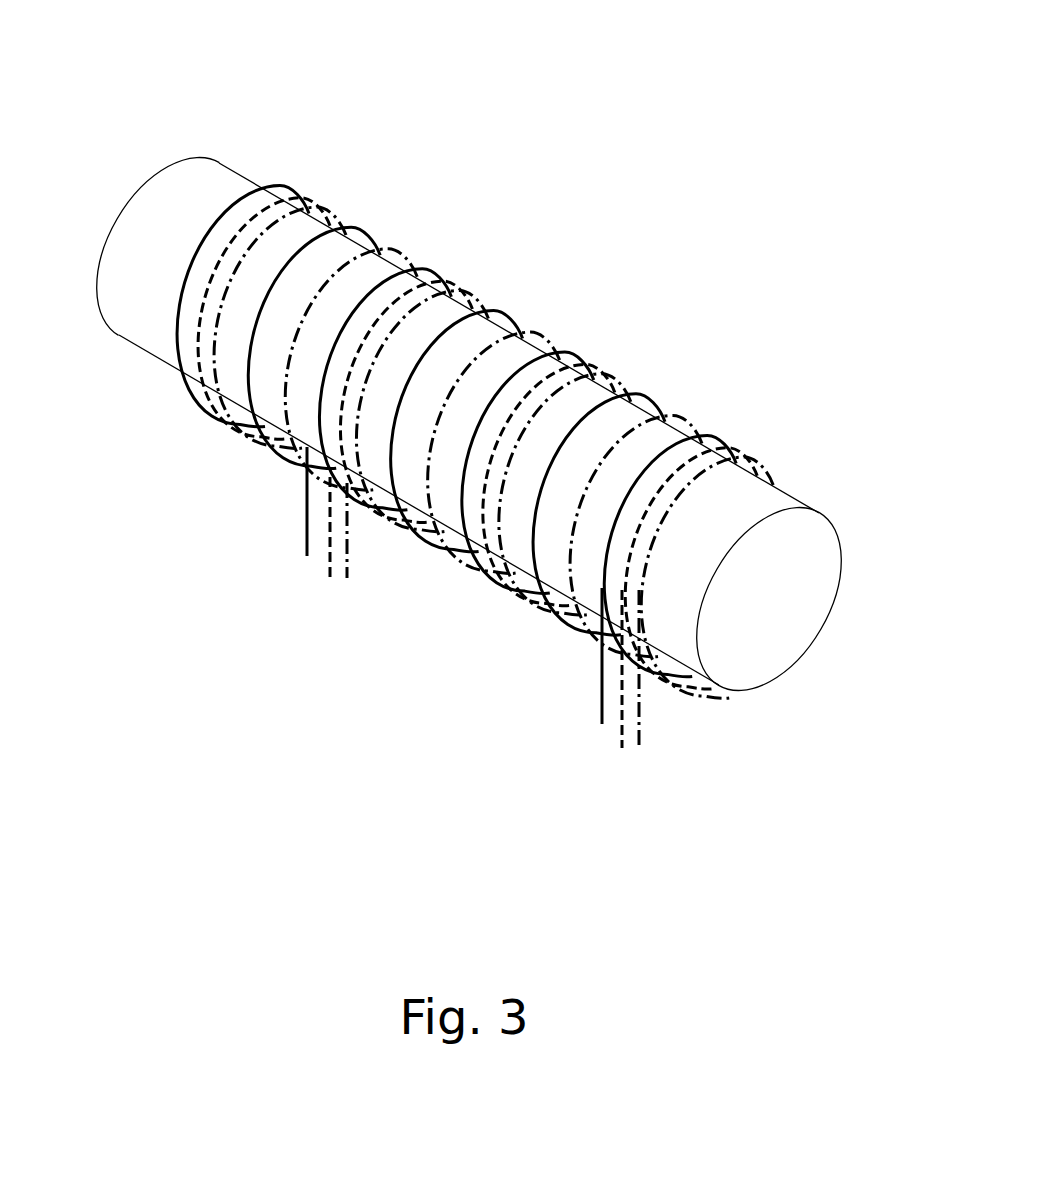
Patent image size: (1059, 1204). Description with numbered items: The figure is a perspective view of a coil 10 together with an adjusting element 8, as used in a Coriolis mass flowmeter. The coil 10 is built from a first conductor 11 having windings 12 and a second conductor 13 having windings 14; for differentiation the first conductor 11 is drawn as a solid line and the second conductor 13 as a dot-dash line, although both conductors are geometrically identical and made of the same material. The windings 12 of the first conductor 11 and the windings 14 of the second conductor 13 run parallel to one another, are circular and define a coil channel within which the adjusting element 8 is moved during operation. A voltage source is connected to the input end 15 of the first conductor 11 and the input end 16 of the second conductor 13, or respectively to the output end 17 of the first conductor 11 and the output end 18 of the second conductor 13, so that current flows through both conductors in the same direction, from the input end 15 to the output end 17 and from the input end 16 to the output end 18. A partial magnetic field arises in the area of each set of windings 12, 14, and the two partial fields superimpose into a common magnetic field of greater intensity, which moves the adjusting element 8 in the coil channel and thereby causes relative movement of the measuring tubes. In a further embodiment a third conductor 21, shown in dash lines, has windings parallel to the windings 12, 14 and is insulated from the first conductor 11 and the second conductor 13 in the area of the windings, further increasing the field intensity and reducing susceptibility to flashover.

The adjusting element 8 is at (764, 500).
The coil 10 is at (471, 438).
The first conductor 11 is at (456, 417).
The windings 12 is at (265, 314).
The second conductor 13 is at (493, 463).
The windings 14 is at (507, 478).
The input end 15 is at (292, 543).
The input end 16 is at (334, 564).
The output end 17 is at (586, 696).
The output end 18 is at (625, 734).
The third conductor 21 is at (686, 454).